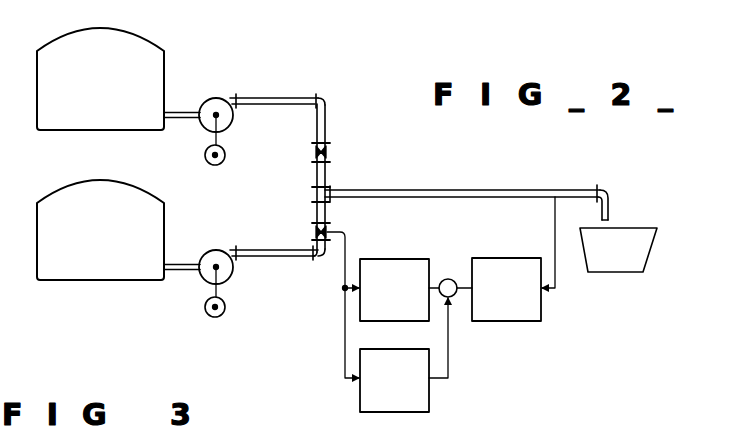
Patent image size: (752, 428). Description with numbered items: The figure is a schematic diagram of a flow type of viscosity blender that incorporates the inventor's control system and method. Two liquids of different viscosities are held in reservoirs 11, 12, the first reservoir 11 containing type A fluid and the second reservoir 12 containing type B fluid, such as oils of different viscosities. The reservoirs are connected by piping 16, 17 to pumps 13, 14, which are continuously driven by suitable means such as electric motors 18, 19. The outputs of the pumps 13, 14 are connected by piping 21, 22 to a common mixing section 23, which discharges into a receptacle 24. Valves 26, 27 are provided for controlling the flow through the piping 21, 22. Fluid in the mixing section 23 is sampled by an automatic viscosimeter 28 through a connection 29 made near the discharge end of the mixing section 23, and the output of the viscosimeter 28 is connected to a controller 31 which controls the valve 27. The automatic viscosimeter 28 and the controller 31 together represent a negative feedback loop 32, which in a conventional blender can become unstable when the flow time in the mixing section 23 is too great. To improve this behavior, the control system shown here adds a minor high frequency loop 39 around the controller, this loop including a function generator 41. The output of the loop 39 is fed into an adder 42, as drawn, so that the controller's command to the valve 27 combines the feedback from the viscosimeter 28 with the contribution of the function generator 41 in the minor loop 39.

The reservoir 11 is at (139, 43).
The reservoir 12 is at (58, 196).
The pump 13 is at (214, 101).
The pump 14 is at (214, 252).
The piping 16 is at (181, 125).
The piping 17 is at (178, 277).
The electric motor 18 is at (226, 159).
The electric motor 19 is at (226, 310).
The piping 21 is at (329, 119).
The piping 22 is at (312, 246).
The mixing section 23 is at (474, 191).
The receptacle 24 is at (659, 258).
The valve 26 is at (329, 154).
The valve 27 is at (330, 233).
The automatic viscosimeter 28 is at (492, 259).
The connection 29 is at (555, 221).
The controller 31 is at (410, 259).
The negative feedback loop 32 is at (561, 285).
The minor high frequency loop 39 is at (345, 341).
The function generator 41 is at (431, 404).
The adder 42 is at (450, 279).